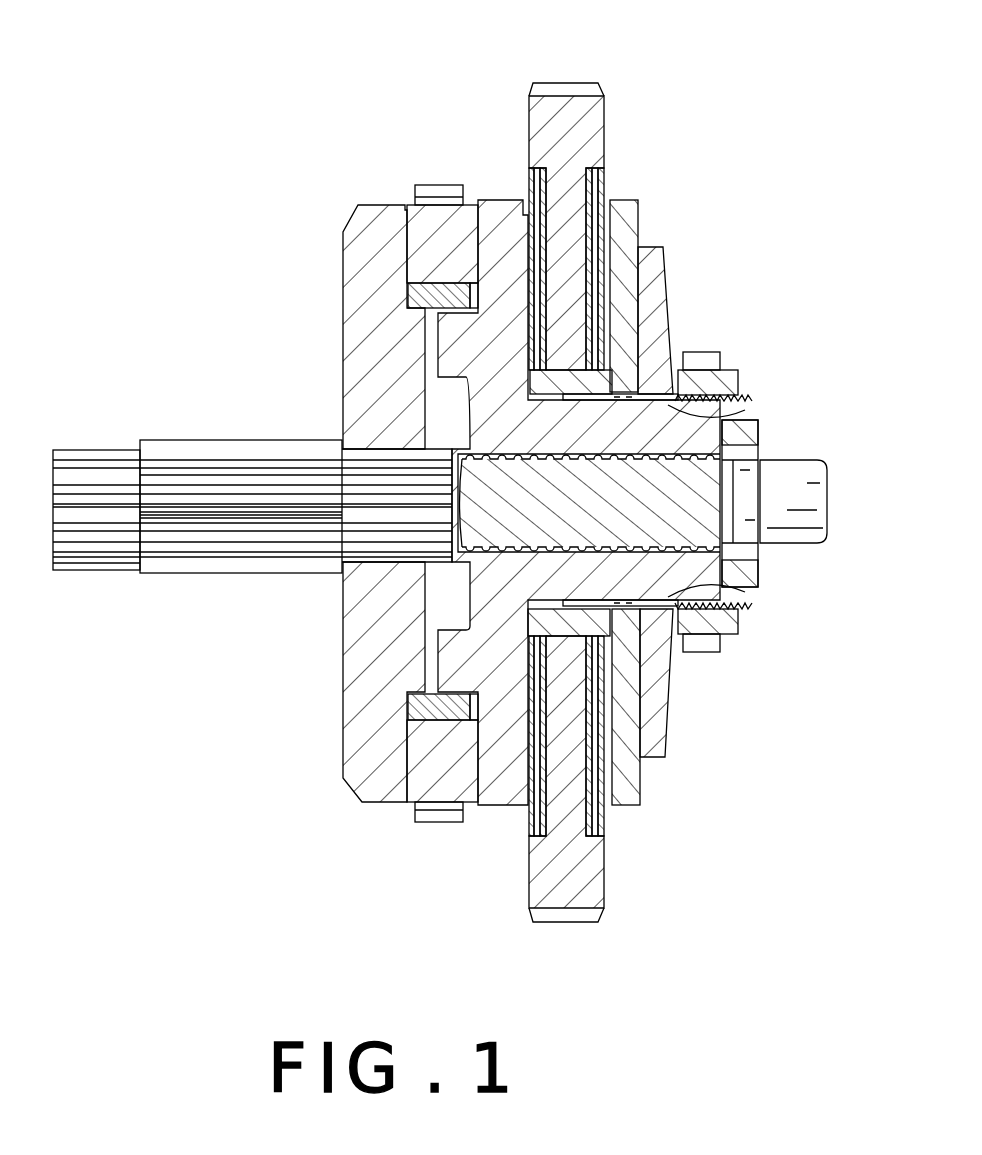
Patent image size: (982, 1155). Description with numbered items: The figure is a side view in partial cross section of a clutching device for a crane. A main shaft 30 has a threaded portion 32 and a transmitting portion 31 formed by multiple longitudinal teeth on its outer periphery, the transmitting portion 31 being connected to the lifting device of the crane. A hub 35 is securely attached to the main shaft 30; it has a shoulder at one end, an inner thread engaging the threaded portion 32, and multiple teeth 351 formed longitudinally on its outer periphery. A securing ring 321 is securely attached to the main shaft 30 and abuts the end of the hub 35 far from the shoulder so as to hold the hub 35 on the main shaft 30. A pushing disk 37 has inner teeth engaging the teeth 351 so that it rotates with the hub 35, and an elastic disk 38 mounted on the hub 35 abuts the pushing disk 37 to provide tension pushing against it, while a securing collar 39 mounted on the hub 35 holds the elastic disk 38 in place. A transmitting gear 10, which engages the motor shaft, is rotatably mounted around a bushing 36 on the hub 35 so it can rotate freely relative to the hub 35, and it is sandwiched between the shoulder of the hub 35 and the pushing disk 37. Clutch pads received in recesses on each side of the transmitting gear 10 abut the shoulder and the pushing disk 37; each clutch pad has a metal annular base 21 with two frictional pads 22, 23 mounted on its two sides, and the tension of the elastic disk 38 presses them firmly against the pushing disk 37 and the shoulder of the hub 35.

The transmitting gear 10 is at (589, 135).
The annular base 21 is at (530, 205).
The frictional pad 22 is at (527, 207).
The frictional pad 23 is at (549, 208).
The main shaft 30 is at (668, 530).
The transmitting portion 31 is at (257, 552).
The threaded portion 32 is at (700, 478).
The securing ring 321 is at (760, 578).
The hub 35 is at (503, 793).
The teeth 351 is at (747, 408).
The bushing 36 is at (588, 383).
The pushing disk 37 is at (633, 217).
The elastic disk 38 is at (657, 290).
The securing collar 39 is at (722, 380).